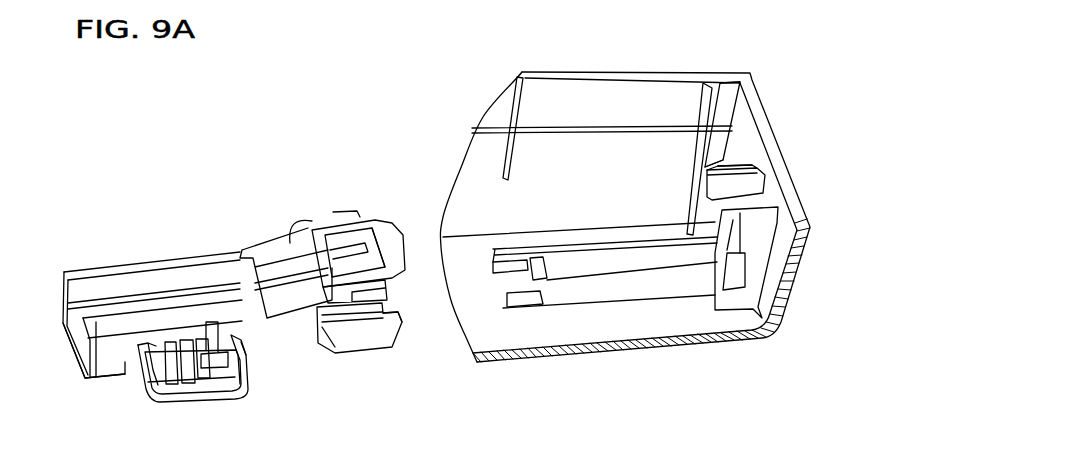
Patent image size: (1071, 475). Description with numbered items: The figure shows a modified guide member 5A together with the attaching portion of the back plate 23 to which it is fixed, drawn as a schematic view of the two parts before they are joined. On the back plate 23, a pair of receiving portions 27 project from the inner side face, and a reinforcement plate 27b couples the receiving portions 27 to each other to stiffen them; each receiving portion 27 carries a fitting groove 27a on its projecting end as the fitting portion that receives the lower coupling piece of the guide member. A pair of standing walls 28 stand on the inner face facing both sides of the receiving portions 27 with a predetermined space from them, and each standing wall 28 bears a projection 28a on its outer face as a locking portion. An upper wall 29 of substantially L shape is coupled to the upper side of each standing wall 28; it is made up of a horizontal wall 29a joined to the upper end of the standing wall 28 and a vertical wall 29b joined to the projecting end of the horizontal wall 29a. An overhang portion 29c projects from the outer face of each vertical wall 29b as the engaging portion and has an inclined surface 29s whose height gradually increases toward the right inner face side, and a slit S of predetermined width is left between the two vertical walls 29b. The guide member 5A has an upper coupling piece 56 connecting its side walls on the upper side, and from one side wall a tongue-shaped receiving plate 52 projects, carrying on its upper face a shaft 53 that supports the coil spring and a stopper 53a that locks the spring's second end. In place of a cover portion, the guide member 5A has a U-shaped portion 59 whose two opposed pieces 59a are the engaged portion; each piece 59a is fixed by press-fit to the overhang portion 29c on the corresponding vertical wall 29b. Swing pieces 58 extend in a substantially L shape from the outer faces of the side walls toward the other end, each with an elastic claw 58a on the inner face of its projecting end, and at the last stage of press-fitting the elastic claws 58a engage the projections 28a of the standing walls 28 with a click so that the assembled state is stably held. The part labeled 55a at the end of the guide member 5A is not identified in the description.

The guide member 5A is at (183, 259).
The housing lower end portion 55a is at (66, 344).
The receiving plate 52 is at (220, 400).
The shaft 53 is at (167, 340).
The stopper 53a is at (250, 358).
The upper coupling piece 56 is at (270, 266).
The U-shaped portion 59 is at (310, 222).
The piece 59a is at (374, 232).
The swing piece 58 is at (312, 222).
The elastic claw 58a is at (336, 212).
The fitting groove 27a is at (503, 302).
The back plate 23 is at (612, 69).
The reinforcement plate 27b is at (537, 258).
The receiving portion 27 is at (573, 245).
The upper wall 29 is at (848, 93).
The horizontal wall 29a is at (724, 140).
The vertical wall 29b is at (738, 170).
The overhang portion 29c is at (726, 162).
The inclined surface 29s is at (717, 167).
The slit S is at (756, 192).
The standing wall 28 is at (693, 207).
The projection 28a is at (750, 270).